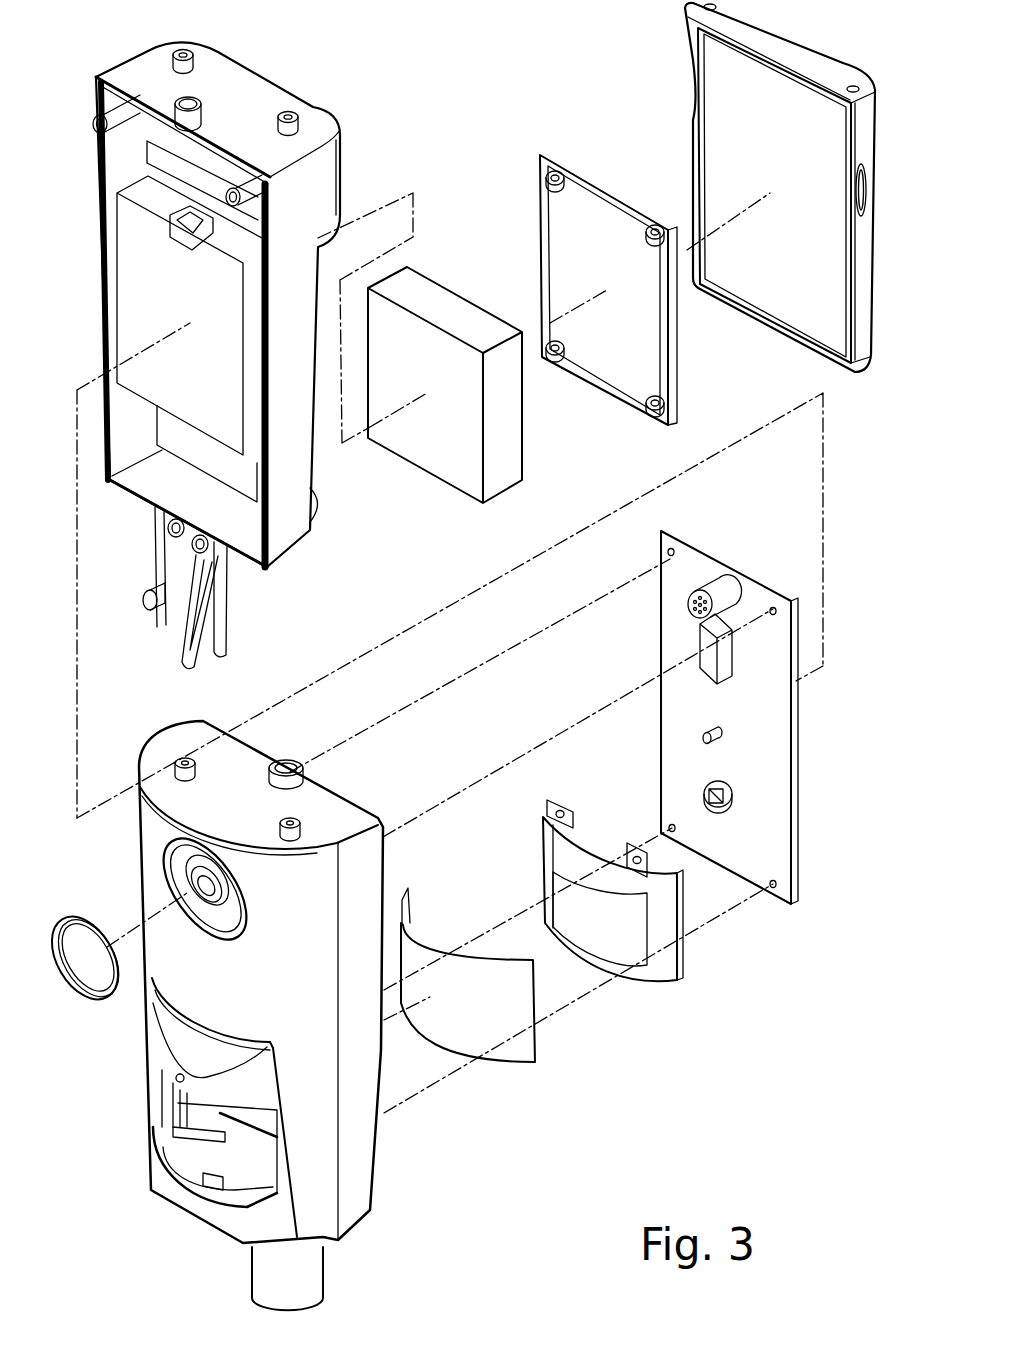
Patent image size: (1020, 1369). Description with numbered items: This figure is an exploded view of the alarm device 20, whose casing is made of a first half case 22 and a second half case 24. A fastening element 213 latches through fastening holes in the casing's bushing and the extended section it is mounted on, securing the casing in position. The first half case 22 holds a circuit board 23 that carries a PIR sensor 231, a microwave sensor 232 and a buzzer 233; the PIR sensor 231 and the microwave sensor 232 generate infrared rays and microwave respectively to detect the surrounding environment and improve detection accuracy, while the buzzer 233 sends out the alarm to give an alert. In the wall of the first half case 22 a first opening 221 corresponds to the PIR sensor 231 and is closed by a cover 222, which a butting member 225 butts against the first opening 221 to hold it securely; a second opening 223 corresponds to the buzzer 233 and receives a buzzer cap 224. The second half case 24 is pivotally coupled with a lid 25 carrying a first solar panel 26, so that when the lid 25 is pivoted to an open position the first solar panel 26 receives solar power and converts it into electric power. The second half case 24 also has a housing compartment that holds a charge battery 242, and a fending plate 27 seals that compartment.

The alarm device 20 is at (469, 153).
The first half case 22 is at (362, 1185).
The circuit board 23 is at (723, 556).
The second half case 24 is at (285, 537).
The lid 25 is at (688, 12).
The first solar panel 26 is at (773, 296).
The fending plate 27 is at (600, 210).
The fastening element 213 is at (203, 626).
The first opening 221 is at (160, 1182).
The cover 222 is at (515, 1050).
The second opening 223 is at (190, 890).
The buzzer cap 224 is at (92, 977).
The butting member 225 is at (660, 972).
The PIR sensor 231 is at (718, 812).
The microwave sensor 232 is at (704, 742).
The buzzer 233 is at (716, 598).
The charge battery 242 is at (435, 453).